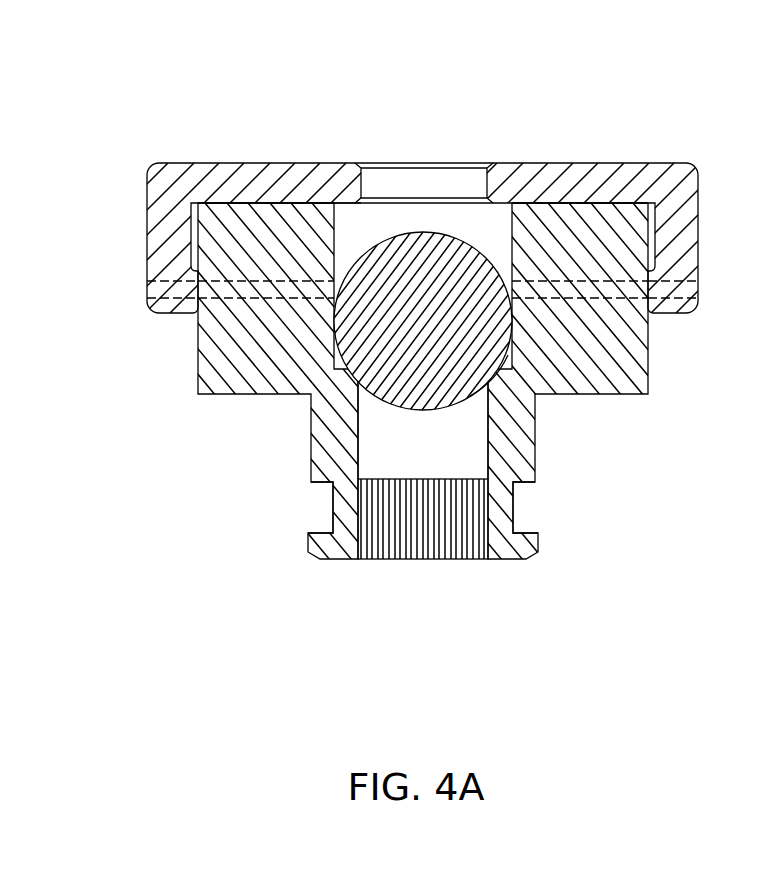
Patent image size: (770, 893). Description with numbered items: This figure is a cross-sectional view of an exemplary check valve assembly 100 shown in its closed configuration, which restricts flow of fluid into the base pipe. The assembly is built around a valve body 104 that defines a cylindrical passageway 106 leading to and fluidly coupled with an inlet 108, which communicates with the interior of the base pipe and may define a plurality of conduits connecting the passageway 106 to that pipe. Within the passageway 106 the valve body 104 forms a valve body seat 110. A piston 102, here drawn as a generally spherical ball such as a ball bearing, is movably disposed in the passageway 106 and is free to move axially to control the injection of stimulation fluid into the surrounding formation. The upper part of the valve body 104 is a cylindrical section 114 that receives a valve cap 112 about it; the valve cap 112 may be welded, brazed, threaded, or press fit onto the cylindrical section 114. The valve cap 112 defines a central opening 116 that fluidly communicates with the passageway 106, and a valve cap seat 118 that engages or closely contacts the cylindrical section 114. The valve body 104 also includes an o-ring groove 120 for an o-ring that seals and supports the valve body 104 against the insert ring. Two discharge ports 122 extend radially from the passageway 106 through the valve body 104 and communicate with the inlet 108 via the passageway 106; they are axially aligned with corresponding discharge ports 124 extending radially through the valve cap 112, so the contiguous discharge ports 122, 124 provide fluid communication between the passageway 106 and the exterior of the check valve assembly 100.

The check valve assembly 100 is at (385, 324).
The piston 102 is at (368, 368).
The valve body 104 is at (385, 343).
The cylindrical passageway 106 is at (368, 442).
The inlet 108 is at (418, 548).
The valve body seat 110 is at (505, 374).
The valve cap 112 is at (385, 205).
The cylindrical section 114 is at (233, 248).
The central opening 116 is at (446, 166).
The valve cap seat 118 is at (352, 220).
The o-ring groove 120 is at (513, 507).
The discharge ports 122 is at (610, 292).
The discharge ports 124 is at (693, 289).